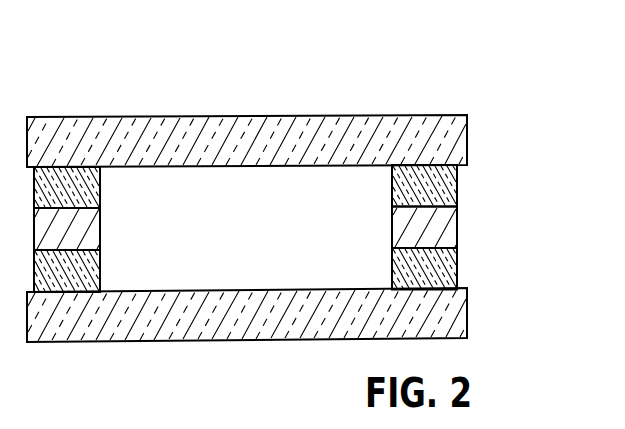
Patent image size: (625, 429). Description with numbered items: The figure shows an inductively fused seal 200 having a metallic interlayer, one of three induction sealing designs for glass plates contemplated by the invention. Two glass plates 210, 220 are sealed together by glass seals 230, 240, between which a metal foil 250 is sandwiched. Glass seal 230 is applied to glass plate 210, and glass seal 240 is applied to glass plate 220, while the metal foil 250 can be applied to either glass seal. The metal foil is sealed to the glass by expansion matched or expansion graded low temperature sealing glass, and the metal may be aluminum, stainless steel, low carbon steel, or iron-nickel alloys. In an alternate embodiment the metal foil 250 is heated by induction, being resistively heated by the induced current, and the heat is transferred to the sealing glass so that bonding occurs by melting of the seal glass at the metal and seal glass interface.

The electronic device package 200 is at (455, 64).
The glass plate 210 is at (467, 137).
The glass plate 220 is at (467, 310).
The glass seal 230 is at (457, 182).
The glass seal 240 is at (457, 265).
The metal foil 250 is at (457, 223).